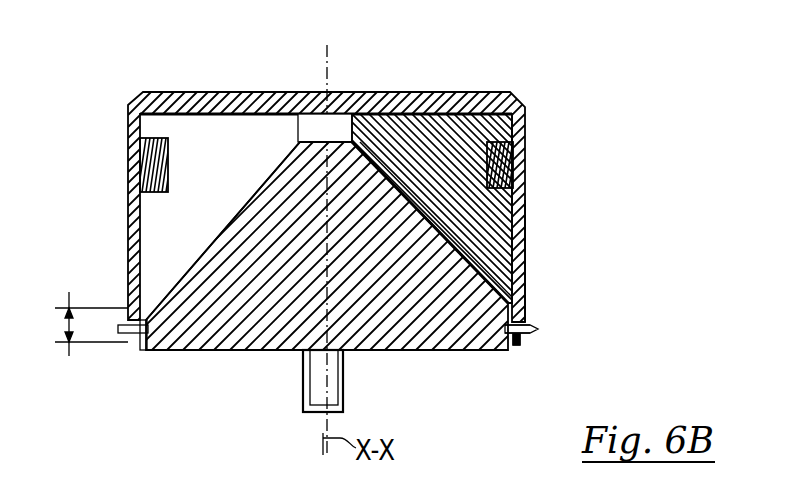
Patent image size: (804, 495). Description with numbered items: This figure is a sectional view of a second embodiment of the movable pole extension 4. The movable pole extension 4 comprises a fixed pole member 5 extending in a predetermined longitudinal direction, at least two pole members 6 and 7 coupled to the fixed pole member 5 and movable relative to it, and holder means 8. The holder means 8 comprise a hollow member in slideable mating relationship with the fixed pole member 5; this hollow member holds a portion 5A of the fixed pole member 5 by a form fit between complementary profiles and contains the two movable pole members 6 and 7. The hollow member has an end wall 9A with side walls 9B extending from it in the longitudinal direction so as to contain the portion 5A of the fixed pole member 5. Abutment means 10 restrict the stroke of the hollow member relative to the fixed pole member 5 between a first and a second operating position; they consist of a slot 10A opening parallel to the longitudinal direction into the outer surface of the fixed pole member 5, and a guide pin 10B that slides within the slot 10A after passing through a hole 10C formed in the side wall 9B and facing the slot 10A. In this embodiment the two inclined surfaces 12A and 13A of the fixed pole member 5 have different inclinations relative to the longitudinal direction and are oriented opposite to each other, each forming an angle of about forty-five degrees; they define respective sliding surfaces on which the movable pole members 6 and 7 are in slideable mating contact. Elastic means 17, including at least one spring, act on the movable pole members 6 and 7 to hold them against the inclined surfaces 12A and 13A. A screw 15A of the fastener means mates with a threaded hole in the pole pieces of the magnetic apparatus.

The movable pole extension 4 is at (592, 58).
The fixed pole member 5 is at (180, 327).
The portion of the fixed pole member 5A is at (89, 324).
The movable pole member 6 is at (395, 138).
The movable pole member 7 is at (223, 132).
The holder means 8 is at (582, 128).
The end wall 9A is at (128, 192).
The side wall 9B is at (526, 258).
The abutment means 10 is at (510, 375).
The slot 10A is at (515, 345).
The guide pin 10B is at (533, 328).
The hole 10C is at (528, 318).
The inclined surface 12A is at (437, 247).
The inclined surface 13A is at (217, 233).
The screw 15A is at (343, 368).
The elastic means 17 is at (148, 122).